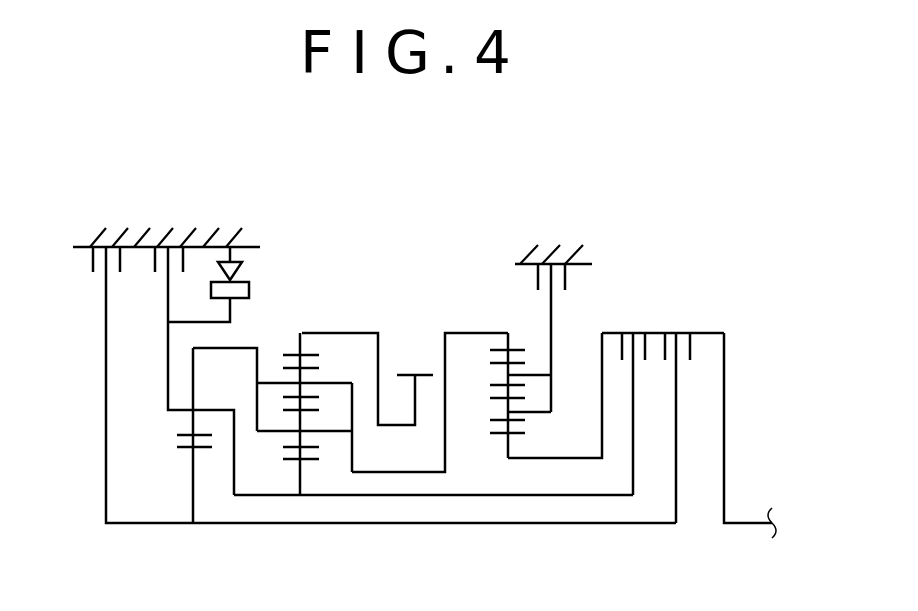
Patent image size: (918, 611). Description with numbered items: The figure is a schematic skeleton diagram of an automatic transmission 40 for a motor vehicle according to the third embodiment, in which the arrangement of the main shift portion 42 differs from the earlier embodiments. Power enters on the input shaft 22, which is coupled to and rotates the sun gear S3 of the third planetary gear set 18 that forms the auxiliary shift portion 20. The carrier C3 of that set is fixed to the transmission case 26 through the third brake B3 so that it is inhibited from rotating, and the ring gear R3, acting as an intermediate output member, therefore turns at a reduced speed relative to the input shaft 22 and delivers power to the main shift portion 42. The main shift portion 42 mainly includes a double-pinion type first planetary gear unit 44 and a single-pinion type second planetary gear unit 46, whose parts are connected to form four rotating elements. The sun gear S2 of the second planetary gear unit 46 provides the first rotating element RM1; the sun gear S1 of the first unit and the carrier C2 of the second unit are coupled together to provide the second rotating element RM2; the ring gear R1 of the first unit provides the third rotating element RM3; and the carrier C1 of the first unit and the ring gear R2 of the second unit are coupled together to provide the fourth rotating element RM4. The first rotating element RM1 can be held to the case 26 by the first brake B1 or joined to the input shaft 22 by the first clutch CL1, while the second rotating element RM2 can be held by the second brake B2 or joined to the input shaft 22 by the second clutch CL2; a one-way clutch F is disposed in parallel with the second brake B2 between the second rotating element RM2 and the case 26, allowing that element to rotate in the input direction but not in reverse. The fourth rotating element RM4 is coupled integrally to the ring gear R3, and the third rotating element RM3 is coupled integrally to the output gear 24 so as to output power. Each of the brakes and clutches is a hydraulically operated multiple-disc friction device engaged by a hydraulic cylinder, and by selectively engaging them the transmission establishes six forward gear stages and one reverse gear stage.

The automatic transmission 40 is at (447, 348).
The main shift portion 42 is at (430, 303).
The first planetary gear unit 44 is at (266, 348).
The third planetary gear set 18 is at (520, 336).
The auxiliary shift portion 20 is at (562, 289).
The output gear 24 is at (412, 375).
The transmission case 26 is at (173, 237).
The input shaft 22 is at (750, 524).
The second planetary gear unit 46 is at (187, 543).
The first brake B1 is at (82, 265).
The second brake B2 is at (174, 371).
The third brake B3 is at (527, 336).
The one-way clutch F is at (221, 284).
The carrier C1 is at (279, 399).
The carrier C2 is at (168, 353).
The carrier C3 is at (552, 363).
The first clutch CL1 is at (701, 409).
The second clutch CL2 is at (654, 328).
The ring gear R1 is at (306, 352).
The ring gear R2 is at (236, 374).
The ring gear R3 is at (513, 348).
The sun gear S1 is at (292, 460).
The sun gear S2 is at (188, 452).
The sun gear S3 is at (497, 433).
The first rotating element RM1 is at (352, 525).
The second rotating element RM2 is at (452, 497).
The third rotating element RM3 is at (352, 332).
The fourth rotating element RM4 is at (395, 458).